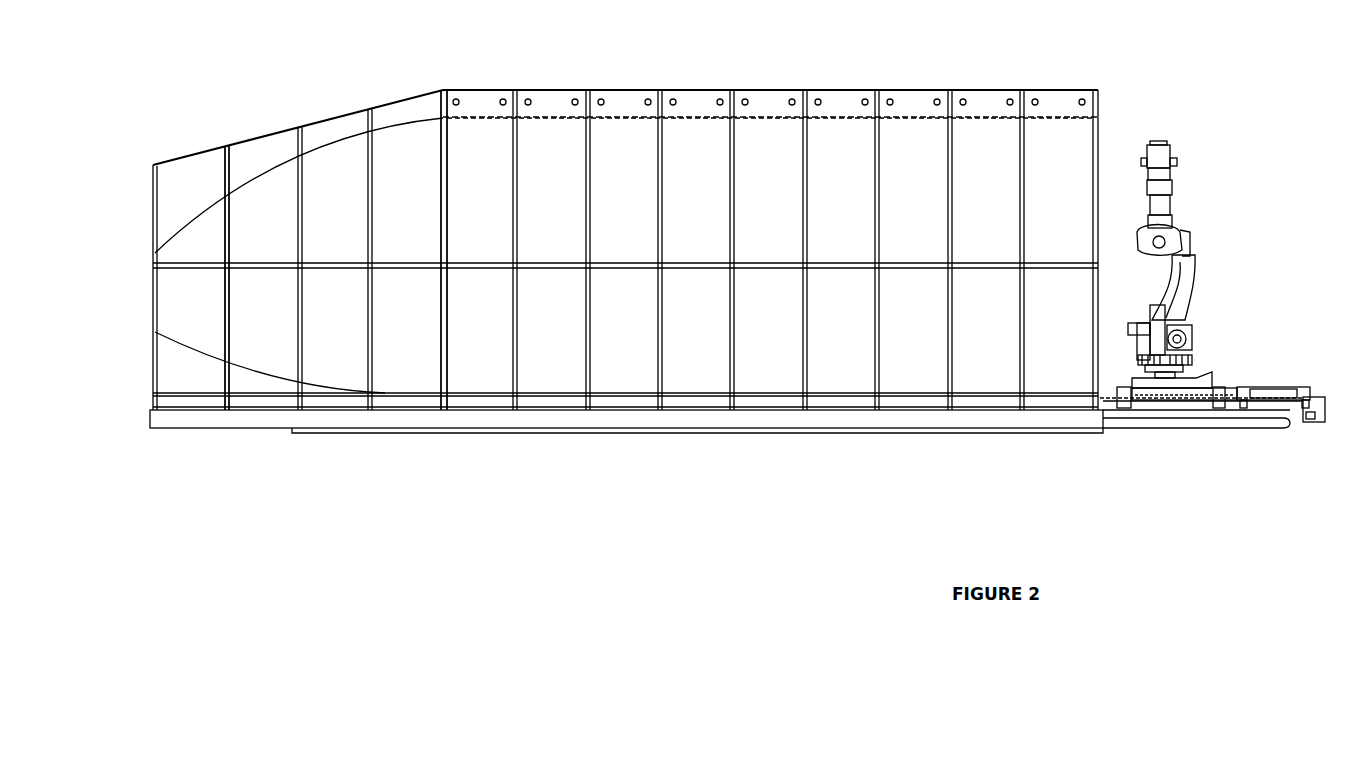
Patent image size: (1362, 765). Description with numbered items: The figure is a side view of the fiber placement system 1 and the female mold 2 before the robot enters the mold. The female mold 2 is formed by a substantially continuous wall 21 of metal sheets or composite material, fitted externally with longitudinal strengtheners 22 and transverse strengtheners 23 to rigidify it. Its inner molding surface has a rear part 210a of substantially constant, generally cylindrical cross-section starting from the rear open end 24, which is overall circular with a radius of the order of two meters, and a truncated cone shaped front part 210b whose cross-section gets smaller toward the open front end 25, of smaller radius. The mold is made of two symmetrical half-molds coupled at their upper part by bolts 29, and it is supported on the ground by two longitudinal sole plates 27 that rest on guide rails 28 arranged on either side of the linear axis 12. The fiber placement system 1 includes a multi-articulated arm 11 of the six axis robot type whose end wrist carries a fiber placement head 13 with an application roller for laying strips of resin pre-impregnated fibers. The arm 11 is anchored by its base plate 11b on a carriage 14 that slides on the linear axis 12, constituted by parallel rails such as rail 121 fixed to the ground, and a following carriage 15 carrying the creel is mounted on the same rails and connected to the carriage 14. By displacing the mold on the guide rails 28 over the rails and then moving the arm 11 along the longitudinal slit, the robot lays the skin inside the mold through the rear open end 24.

The fiber placement system 1 is at (1191, 240).
The female mold 2 is at (546, 88).
The multi-articulated arm 11 is at (1192, 268).
The base plate 11b is at (1210, 378).
The linear axis 12 is at (1321, 394).
The fiber placement head 13 is at (1162, 155).
The carriage 14 is at (1131, 395).
The following carriage 15 is at (1283, 387).
The wall 21 is at (413, 140).
The longitudinal strengtheners 22 is at (177, 177).
The transverse strengtheners 23 is at (228, 177).
The rear open end 24 is at (1097, 122).
The front end 25 is at (157, 292).
The longitudinal sole plates 27 is at (993, 418).
The guide rails 28 is at (1193, 428).
The bolts 29 is at (648, 99).
The rail 121 is at (1258, 410).
The rear part 210a is at (843, 132).
The front part 210b is at (340, 150).